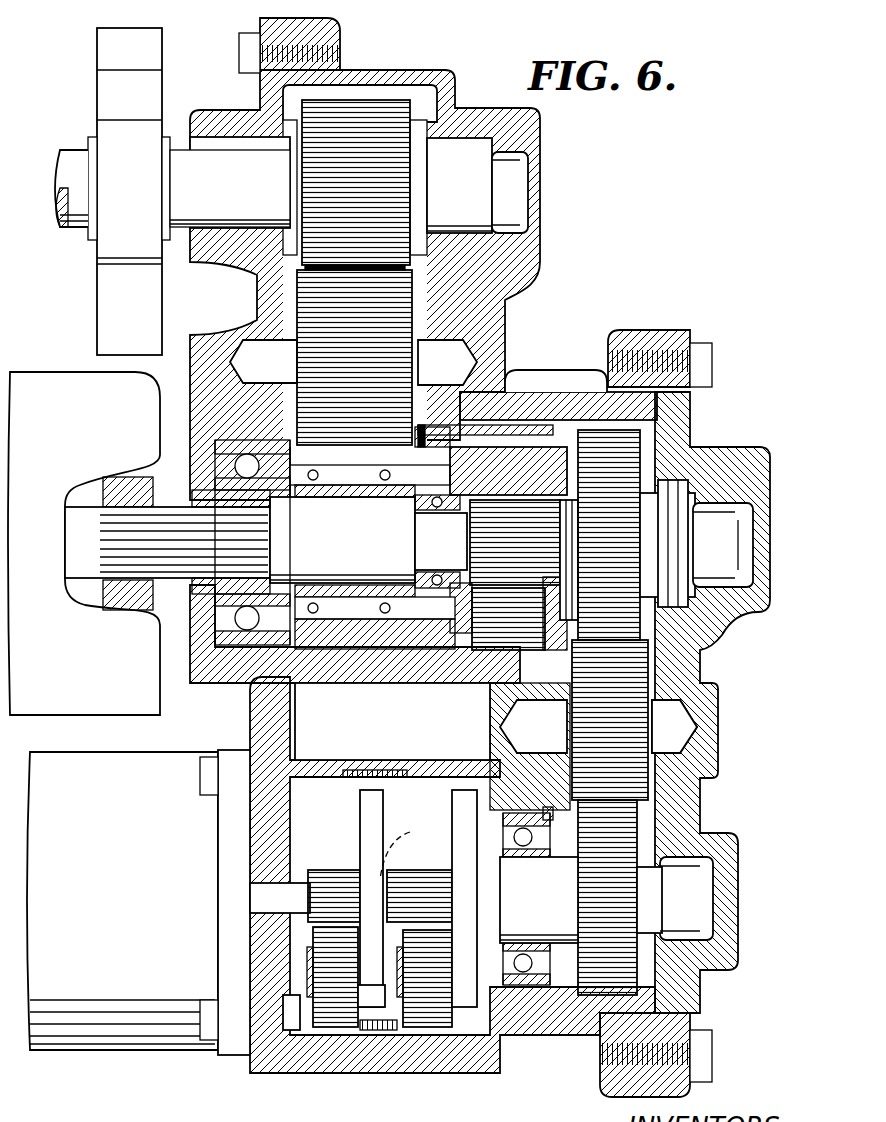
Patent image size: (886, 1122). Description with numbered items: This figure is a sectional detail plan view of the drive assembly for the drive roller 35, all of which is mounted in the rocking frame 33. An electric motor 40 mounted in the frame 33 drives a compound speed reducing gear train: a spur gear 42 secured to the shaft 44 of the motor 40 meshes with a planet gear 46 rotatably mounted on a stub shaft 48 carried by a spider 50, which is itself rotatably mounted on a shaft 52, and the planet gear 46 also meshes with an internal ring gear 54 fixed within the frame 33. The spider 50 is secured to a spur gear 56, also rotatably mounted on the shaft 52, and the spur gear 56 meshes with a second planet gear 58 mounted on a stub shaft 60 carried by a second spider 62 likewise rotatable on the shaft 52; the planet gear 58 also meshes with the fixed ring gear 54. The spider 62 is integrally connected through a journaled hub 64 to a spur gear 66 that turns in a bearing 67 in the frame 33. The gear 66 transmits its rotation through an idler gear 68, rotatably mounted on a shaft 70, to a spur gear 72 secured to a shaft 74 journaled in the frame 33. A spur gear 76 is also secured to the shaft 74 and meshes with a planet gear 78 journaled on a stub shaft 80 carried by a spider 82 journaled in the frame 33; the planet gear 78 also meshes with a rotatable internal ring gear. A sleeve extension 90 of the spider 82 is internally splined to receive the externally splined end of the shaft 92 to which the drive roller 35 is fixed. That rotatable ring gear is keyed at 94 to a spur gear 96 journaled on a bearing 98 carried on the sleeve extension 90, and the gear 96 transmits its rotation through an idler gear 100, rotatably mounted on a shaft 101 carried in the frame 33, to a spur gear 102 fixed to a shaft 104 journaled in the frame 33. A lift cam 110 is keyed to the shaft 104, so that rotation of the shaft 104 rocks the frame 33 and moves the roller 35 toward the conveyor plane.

The rocking frame 33 is at (525, 133).
The drive roller 35 is at (84, 543).
The electric motor 40 is at (138, 902).
The spur gear 42 is at (335, 875).
The shaft 44 is at (270, 905).
The planet gear 46 is at (335, 1010).
The stub shaft 48 is at (380, 1005).
The spider 50 is at (362, 805).
The shaft 52 is at (410, 847).
The internal ring gear 54 is at (295, 1025).
The spur gear 56 is at (400, 895).
The second planet gear 58 is at (430, 1005).
The stub shaft 60 is at (490, 1000).
The spider 62 is at (462, 800).
The journaled hub 64 is at (535, 905).
The spur gear 66 is at (595, 975).
The bearing 67 is at (693, 905).
The idler gear 68 is at (615, 762).
The shaft 70 is at (665, 725).
The spur gear 72 is at (625, 470).
The shaft 74 is at (740, 560).
The spur gear 76 is at (525, 505).
The planet gear 78 is at (505, 640).
The stub shaft 80 is at (435, 610).
The spider 82 is at (497, 455).
The sleeve extension 90 is at (195, 600).
The shaft 92 is at (120, 545).
The key 94 is at (420, 437).
The spur gear 96 is at (365, 640).
The bearing 98 is at (340, 620).
The idler gear 100 is at (400, 280).
The shaft 101 is at (450, 375).
The spur gear 102 is at (370, 115).
The shaft 104 is at (497, 205).
The lift cam 110 is at (105, 98).